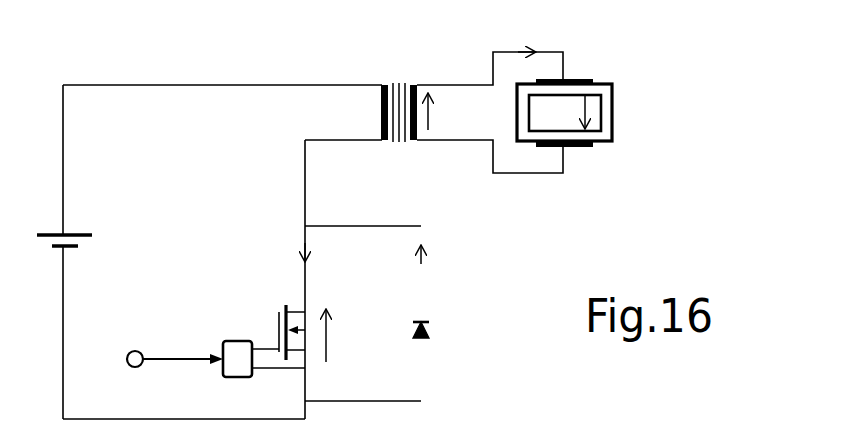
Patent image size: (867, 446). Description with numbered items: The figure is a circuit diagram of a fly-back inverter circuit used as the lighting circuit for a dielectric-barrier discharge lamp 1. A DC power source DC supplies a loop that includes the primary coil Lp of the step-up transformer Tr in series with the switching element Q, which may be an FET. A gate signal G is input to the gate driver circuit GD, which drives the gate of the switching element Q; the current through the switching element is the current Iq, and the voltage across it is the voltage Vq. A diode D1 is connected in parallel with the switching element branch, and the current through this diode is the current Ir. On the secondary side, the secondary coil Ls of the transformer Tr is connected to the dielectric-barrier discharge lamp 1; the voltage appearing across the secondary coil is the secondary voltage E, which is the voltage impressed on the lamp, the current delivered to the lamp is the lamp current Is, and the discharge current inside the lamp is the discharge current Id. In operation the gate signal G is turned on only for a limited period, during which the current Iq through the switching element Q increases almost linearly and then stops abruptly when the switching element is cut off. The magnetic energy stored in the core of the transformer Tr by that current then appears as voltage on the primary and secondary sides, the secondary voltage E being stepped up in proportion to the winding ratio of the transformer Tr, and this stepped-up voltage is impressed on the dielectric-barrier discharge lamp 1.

The dielectric-barrier discharge lamp 1 is at (612, 84).
The DC power source DC is at (40, 242).
The transformer Tr is at (397, 143).
The primary coil Lp is at (370, 97).
The secondary coil Ls is at (427, 97).
The secondary voltage E is at (444, 111).
The lamp current Is is at (526, 32).
The discharge current Id is at (610, 112).
The switching element current Iq is at (289, 250).
The diode current Ir is at (434, 251).
The switching element Q is at (283, 306).
The switching element voltage Vq is at (344, 335).
The gate driver circuit GD is at (237, 338).
The gate signal G is at (174, 342).
The diode D1 is at (442, 332).